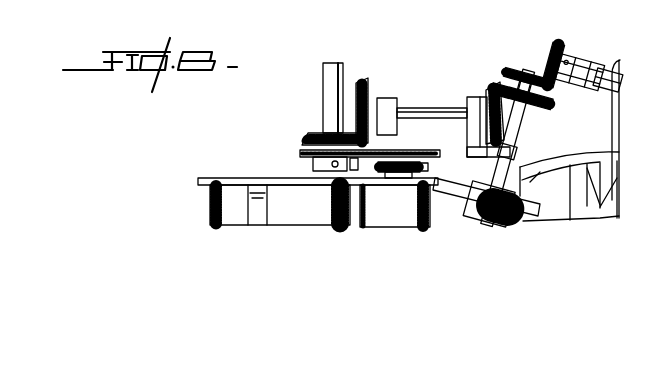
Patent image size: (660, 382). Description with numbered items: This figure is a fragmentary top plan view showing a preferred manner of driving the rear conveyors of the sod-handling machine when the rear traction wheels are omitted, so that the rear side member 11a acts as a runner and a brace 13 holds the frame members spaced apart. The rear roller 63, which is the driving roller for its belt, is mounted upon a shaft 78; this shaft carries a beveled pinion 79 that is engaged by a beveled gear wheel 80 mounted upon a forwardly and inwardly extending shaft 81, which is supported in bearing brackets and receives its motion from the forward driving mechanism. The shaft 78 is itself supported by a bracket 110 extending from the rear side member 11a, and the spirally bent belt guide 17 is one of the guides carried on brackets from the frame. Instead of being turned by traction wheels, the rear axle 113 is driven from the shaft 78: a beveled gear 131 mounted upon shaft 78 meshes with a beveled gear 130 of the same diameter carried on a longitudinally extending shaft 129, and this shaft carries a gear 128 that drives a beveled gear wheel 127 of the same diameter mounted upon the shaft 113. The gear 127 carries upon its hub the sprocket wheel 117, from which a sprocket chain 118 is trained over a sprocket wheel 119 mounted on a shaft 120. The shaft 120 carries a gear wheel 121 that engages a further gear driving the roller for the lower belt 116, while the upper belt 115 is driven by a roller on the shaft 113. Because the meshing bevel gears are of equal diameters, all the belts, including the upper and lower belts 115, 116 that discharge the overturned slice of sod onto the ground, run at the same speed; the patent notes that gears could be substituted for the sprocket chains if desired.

The rear side member 11a is at (200, 180).
The brace 13 is at (259, 188).
The belt guide 17 is at (563, 157).
The roller 63 is at (477, 218).
The shaft 78 is at (515, 122).
The beveled pinion 79 is at (517, 68).
The beveled gear wheel 80 is at (552, 47).
The shaft 81 is at (597, 72).
The bracket 110 is at (532, 198).
The rear axle 113 is at (323, 93).
The upper belt 115 is at (212, 215).
The lower belt 116 is at (373, 204).
The sprocket wheel 117 is at (300, 153).
The sprocket chain 118 is at (398, 150).
The sprocket wheel 119 is at (433, 156).
The shaft 120 is at (396, 180).
The gear wheel 121 is at (422, 167).
The beveled gear wheel 127 is at (307, 136).
The gear 128 is at (362, 82).
The longitudinally extending shaft 129 is at (423, 108).
The beveled gear 130 is at (485, 90).
The beveled gear 131 is at (548, 98).